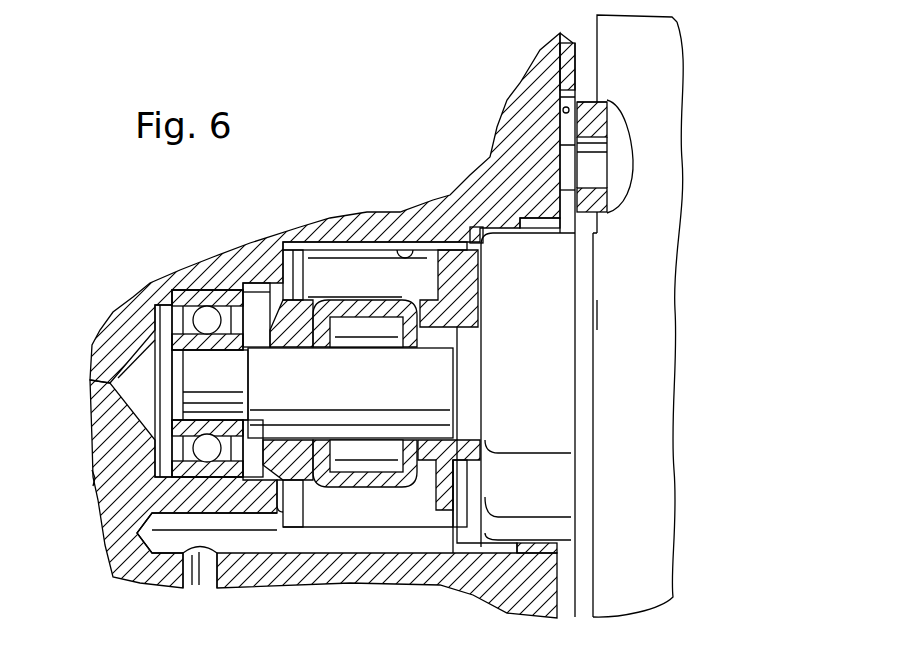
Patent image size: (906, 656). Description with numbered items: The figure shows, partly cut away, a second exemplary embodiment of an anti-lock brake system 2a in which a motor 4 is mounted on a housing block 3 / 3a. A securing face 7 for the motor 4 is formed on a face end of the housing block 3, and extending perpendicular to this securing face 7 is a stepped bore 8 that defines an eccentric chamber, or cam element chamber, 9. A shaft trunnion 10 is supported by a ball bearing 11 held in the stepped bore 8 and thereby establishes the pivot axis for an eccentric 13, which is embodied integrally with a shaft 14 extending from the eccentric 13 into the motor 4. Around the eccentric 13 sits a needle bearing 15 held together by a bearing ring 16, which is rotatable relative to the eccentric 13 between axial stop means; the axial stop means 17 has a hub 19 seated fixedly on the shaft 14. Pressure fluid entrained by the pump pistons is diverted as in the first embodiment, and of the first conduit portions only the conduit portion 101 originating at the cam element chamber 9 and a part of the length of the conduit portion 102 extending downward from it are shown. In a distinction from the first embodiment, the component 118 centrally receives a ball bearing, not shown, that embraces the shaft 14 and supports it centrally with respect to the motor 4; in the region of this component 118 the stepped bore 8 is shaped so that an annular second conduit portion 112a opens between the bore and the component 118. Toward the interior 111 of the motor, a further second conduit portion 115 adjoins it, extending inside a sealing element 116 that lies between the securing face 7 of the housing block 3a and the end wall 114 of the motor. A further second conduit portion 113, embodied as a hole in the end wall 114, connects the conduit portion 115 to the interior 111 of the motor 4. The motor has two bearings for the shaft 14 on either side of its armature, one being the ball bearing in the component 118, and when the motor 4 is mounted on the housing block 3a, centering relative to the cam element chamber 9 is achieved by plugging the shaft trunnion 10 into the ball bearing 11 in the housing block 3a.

The anti-lock brake system 2a is at (640, 308).
The housing block 3 is at (520, 127).
The housing block 3a is at (113, 318).
The motor 4 is at (660, 113).
The securing face 7 is at (567, 112).
The stepped bore 8 is at (405, 243).
The eccentric chamber 9 is at (357, 255).
The shaft trunnion 10 is at (198, 387).
The ball bearing 11 is at (93, 478).
The eccentric 13 is at (356, 392).
The shaft 14 is at (480, 424).
The needle bearing 15 is at (372, 462).
The bearing ring 16 is at (337, 483).
The axial stop means 17 is at (442, 484).
The hub 19 is at (485, 455).
The conduit portion 101 is at (160, 565).
The conduit portion 102 is at (200, 580).
The interior of the motor 111 is at (600, 180).
The second conduit portion 112a is at (545, 224).
The second conduit portion 113 is at (600, 150).
The end wall 114 is at (587, 53).
The second conduit portion 115 is at (562, 203).
The sealing element 116 is at (560, 50).
The component 118 is at (500, 347).